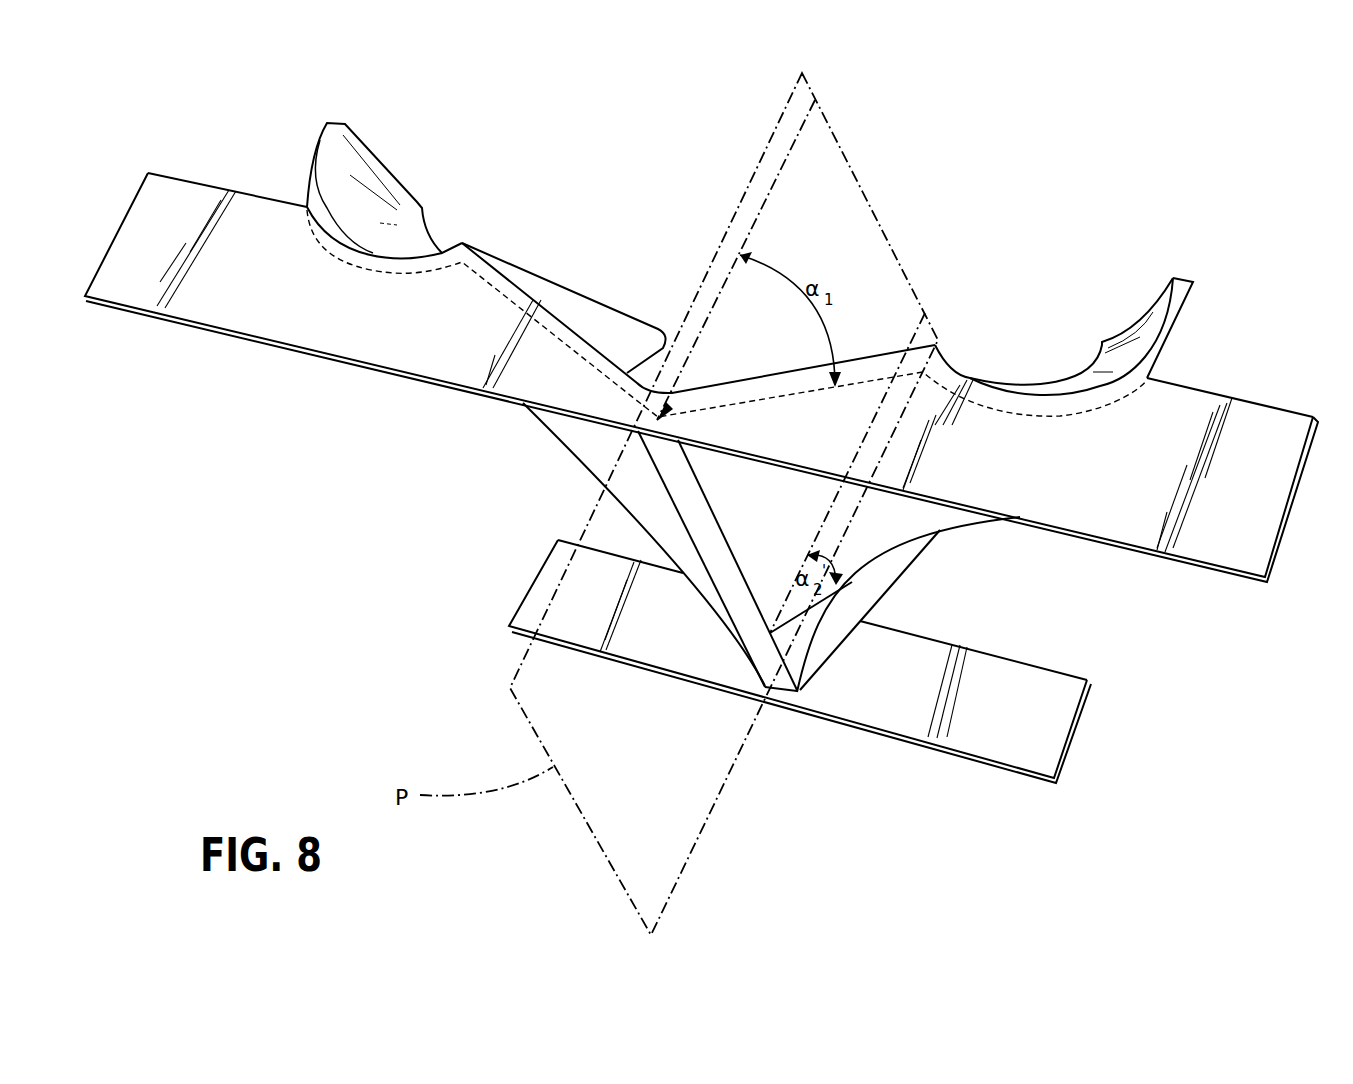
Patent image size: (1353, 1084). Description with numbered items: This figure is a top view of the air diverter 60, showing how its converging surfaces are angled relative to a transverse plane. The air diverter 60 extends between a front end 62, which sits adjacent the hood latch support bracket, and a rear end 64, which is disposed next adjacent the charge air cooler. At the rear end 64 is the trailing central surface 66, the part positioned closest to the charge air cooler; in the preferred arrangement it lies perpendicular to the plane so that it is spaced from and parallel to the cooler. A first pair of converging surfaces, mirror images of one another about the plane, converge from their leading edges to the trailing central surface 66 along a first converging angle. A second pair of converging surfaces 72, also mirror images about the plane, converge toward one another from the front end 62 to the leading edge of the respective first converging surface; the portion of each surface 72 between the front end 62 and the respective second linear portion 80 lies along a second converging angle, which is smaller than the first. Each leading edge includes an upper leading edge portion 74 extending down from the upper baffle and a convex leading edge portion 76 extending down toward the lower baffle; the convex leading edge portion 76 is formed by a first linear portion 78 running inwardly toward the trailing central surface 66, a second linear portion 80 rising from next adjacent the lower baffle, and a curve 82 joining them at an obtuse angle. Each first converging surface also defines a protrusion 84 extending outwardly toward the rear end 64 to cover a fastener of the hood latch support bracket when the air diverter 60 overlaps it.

The air diverter 60 is at (1253, 313).
The front end 62 is at (333, 118).
The rear end 64 is at (765, 673).
The trailing central surface 66 is at (745, 632).
The second pair of converging surfaces 72 is at (590, 433).
The upper leading edge portion 74 is at (867, 603).
The convex leading edge portion 76 is at (1003, 524).
The first linear portion 78 is at (597, 487).
The second linear portion 80 is at (693, 585).
The curve 82 is at (647, 527).
The protrusion 84 is at (373, 252).